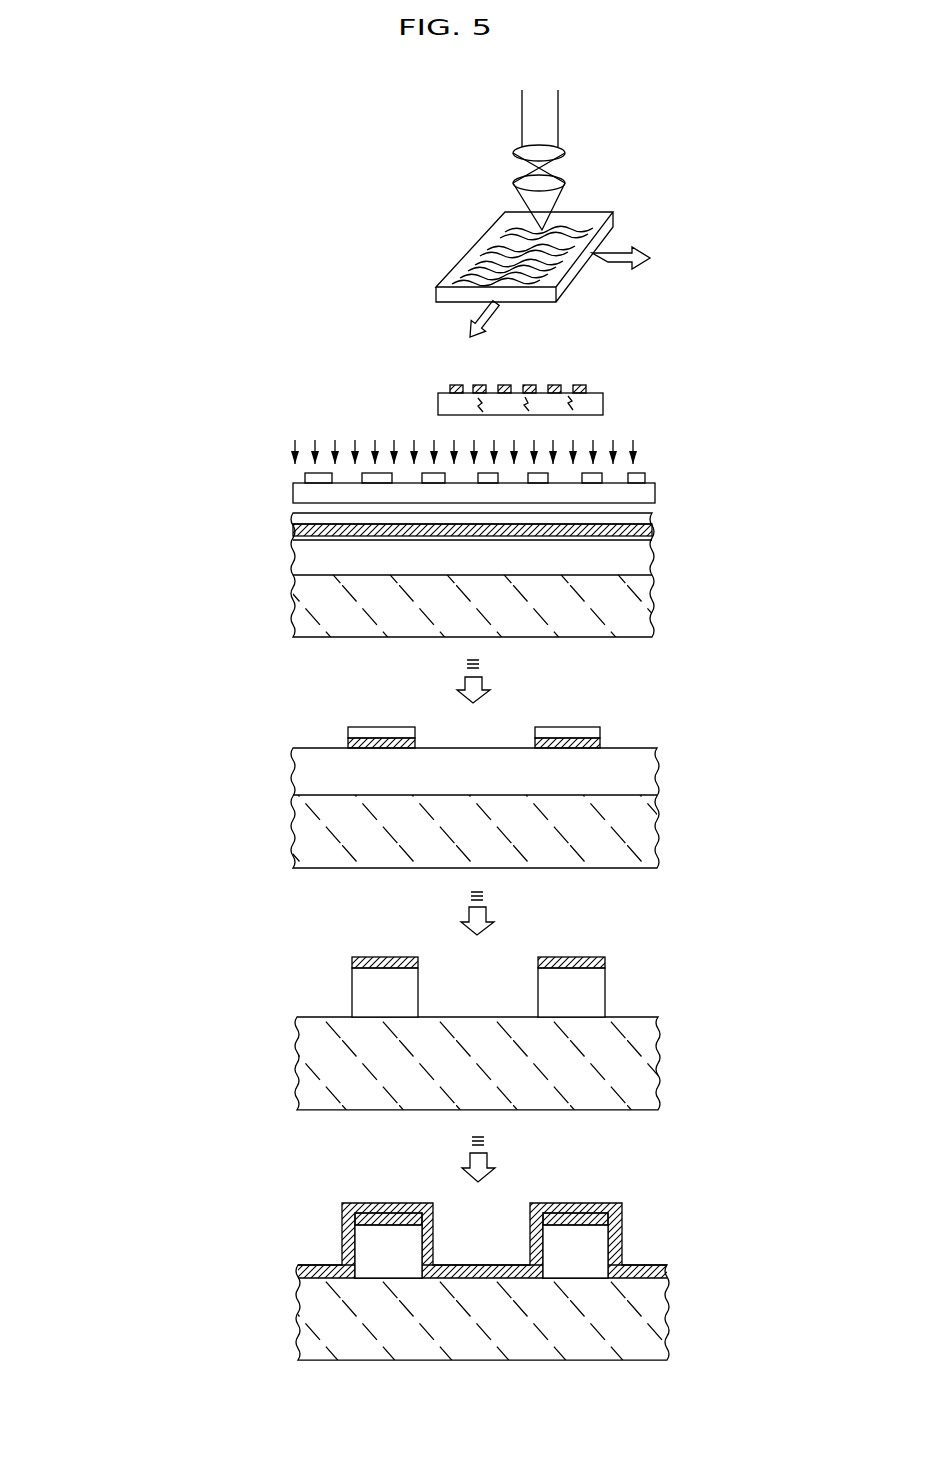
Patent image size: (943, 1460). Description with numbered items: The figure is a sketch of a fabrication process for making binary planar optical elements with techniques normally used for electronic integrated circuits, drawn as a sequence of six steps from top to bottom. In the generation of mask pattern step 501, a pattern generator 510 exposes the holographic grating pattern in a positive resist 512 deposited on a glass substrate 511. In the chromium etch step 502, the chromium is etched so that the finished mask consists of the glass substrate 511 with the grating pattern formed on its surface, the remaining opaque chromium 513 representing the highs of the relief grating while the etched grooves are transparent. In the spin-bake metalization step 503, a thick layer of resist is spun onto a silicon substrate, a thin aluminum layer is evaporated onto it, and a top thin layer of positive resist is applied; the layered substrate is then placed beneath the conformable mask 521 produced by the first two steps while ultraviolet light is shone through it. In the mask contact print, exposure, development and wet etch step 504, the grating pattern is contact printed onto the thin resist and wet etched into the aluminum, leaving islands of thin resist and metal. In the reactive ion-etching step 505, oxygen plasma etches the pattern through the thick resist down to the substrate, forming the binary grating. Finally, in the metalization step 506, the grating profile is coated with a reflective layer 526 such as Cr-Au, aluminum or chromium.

The generation of mask pattern step 501 is at (424, 217).
The chromium etch step 502 is at (434, 385).
The spin-bake metalization step 503 is at (453, 528).
The mask contact print, exposure, development and wet etch step 504 is at (405, 764).
The reactive ion-etching step 505 is at (405, 1001).
The metalization step 506 is at (409, 1248).
The pattern generator 510 is at (542, 82).
The glass substrate 511 is at (605, 203).
The positive resist 512 is at (595, 237).
The chromium 513 is at (600, 378).
The conformable mask 521 is at (658, 473).
The reflective layer 526 is at (578, 1192).